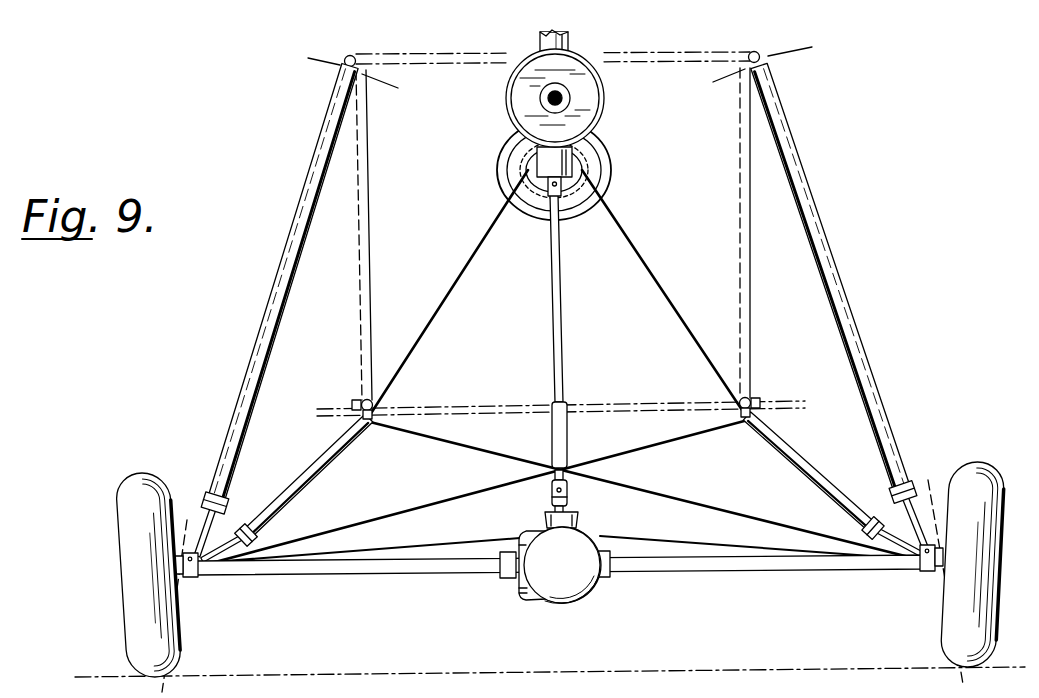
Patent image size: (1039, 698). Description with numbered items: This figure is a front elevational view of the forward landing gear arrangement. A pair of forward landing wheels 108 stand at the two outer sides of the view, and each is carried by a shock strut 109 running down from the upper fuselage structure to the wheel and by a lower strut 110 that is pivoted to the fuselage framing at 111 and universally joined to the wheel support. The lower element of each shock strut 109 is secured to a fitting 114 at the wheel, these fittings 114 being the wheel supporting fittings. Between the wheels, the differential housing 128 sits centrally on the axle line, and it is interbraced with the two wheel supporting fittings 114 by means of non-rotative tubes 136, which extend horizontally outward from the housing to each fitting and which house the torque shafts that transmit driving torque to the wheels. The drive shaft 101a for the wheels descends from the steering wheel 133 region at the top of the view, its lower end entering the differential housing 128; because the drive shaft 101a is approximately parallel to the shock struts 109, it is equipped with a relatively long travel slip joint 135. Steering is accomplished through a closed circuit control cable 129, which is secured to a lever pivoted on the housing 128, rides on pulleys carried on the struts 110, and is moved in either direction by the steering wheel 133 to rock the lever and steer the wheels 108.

The drive shaft 101a is at (562, 325).
The forward landing wheels 108 is at (130, 507).
The shock struts 109 is at (276, 279).
The struts 110 is at (806, 456).
The fuselage framing pivot 111 is at (358, 407).
The fitting 114 is at (196, 581).
The differential housing 128 is at (578, 601).
The closed circuit control cable 129 is at (472, 543).
The steering wheel 133 is at (612, 165).
The slip joint 135 is at (568, 428).
The non-rotative tubes 136 is at (352, 575).